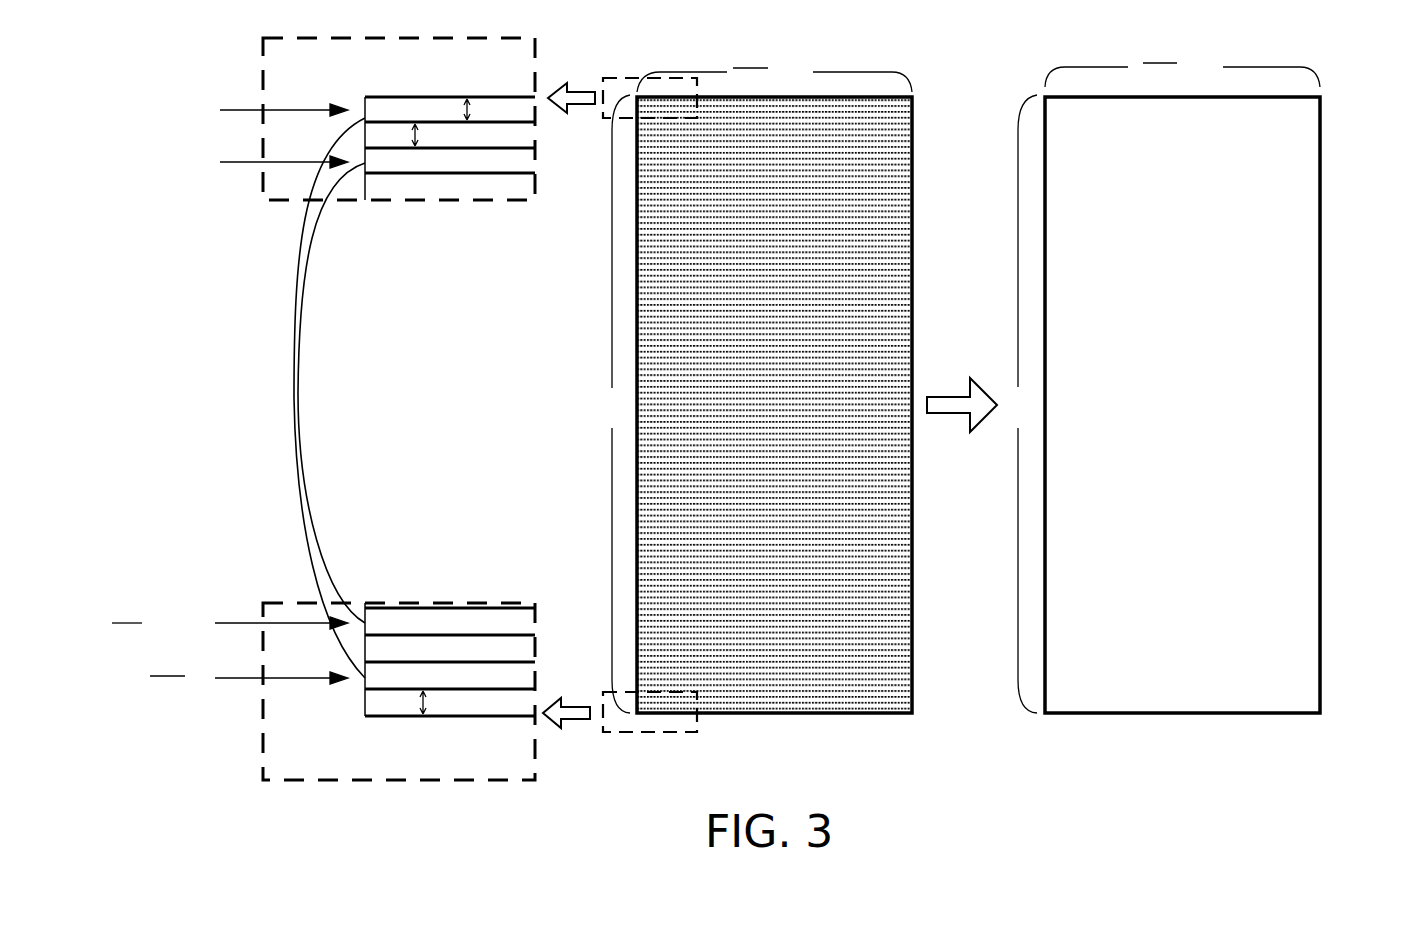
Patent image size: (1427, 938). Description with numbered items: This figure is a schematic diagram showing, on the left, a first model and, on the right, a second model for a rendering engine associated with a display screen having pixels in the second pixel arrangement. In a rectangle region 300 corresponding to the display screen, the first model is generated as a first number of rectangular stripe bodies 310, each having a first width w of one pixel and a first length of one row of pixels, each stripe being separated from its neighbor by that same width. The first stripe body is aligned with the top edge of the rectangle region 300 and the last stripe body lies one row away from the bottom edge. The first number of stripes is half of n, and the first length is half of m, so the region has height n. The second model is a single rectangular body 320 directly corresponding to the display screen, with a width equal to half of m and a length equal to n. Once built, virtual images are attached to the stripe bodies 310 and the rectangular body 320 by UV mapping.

The rectangle region 300 is at (912, 118).
The rectangular stripe bodies 310 is at (330, 744).
The rectangular body 320 is at (1320, 140).